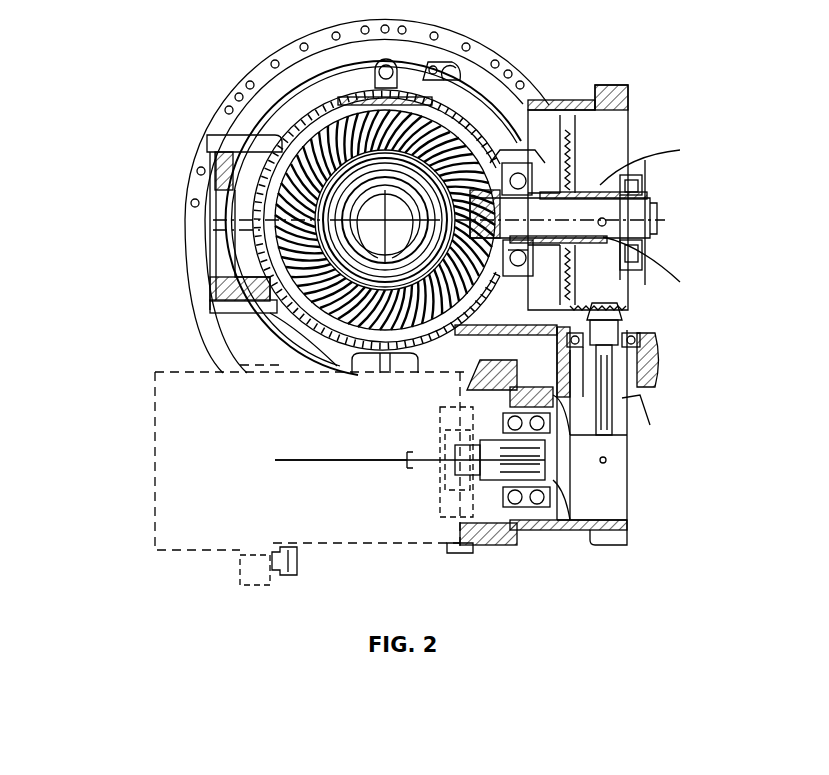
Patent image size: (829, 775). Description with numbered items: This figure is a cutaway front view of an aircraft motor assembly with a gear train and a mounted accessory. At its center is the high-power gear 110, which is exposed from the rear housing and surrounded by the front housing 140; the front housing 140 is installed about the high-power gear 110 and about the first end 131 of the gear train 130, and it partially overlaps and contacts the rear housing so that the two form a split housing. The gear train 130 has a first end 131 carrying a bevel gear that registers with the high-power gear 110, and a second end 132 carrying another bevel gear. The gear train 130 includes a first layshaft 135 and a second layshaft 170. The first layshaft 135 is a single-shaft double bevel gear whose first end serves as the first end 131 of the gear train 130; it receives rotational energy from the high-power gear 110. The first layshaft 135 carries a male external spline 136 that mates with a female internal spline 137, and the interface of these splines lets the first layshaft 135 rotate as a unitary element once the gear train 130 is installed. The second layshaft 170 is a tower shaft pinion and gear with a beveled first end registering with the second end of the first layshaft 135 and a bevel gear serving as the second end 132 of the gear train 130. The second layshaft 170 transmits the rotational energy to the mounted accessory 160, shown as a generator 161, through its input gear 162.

The high-power gear 110 is at (273, 183).
The gear train 130 is at (538, 208).
The first end 131 is at (486, 186).
The front housing 140 is at (630, 89).
The female internal spline 137 is at (641, 183).
The male external spline 136 is at (652, 227).
The first layshaft 135 is at (641, 262).
The second layshaft 170 is at (610, 350).
The second end 132 is at (622, 408).
The input gear 162 is at (575, 490).
The mounted accessory 160 is at (153, 551).
The generator 161 is at (276, 504).